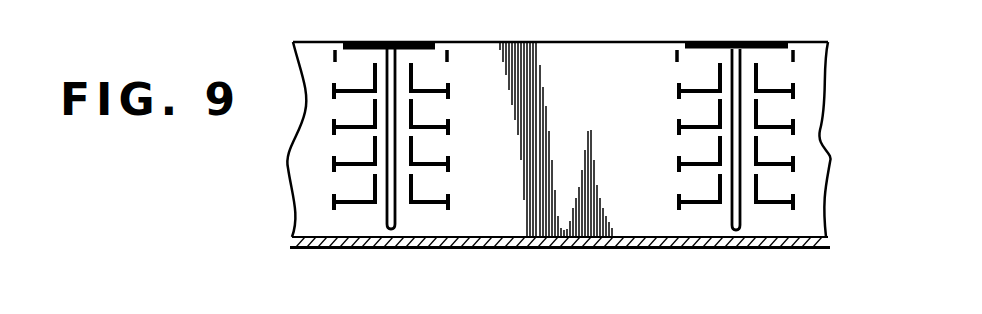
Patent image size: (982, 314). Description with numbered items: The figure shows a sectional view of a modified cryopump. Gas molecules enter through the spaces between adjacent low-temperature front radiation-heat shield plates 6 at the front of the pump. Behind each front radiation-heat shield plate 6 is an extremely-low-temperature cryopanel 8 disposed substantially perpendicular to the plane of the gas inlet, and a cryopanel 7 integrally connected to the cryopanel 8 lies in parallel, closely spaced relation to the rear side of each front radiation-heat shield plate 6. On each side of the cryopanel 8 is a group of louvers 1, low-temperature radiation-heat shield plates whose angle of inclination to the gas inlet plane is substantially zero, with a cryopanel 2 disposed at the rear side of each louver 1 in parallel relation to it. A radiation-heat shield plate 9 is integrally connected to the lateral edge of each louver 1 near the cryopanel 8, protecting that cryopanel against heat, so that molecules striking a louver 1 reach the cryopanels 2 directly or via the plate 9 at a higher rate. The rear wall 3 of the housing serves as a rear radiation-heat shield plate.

The louver 1 is at (348, 88).
The cryopanel 2 is at (352, 133).
The rear wall 3 is at (544, 249).
The front radiation-heat shield plate 6 is at (376, 42).
The cryopanel 7 is at (423, 50).
The cryopanel 8 is at (388, 220).
The radiation-heat shield plate 9 is at (413, 108).